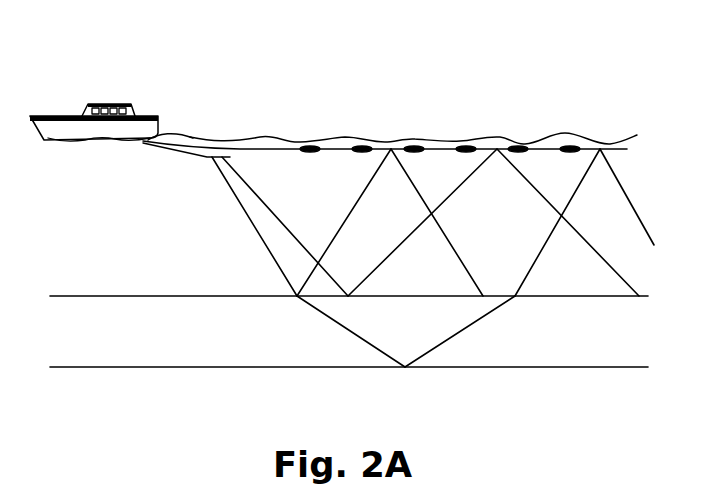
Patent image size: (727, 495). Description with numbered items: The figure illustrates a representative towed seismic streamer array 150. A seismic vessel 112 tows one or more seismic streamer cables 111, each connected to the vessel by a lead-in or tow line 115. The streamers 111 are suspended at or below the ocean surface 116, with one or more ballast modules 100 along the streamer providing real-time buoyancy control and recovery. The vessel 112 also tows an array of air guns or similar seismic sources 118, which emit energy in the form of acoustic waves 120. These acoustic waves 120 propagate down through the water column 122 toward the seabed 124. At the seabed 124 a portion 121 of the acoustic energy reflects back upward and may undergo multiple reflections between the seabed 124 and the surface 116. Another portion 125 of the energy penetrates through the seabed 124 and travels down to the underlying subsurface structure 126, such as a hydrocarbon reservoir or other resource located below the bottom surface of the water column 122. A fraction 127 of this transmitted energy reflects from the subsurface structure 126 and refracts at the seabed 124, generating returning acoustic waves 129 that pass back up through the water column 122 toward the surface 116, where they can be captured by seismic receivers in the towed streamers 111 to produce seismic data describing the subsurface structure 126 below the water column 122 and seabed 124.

The ballast modules 100 is at (522, 147).
The seismic streamer cables 111 is at (279, 151).
The seismic vessel 112 is at (107, 104).
The lead-in or tow line 115 is at (195, 134).
The ocean surface 116 is at (297, 142).
The seismic sources 118 is at (203, 158).
The acoustic waves 120 is at (266, 250).
The reflected portion of acoustic energy 121 is at (369, 185).
The water column 122 is at (100, 258).
The seabed 124 is at (215, 298).
The transmitted portion of acoustic energy 125 is at (347, 333).
The subsurface structure 126 is at (449, 368).
The reflected fraction of transmitted acoustic energy 127 is at (463, 332).
The returning acoustic waves 129 is at (533, 268).
The towed seismic streamer array 150 is at (547, 67).